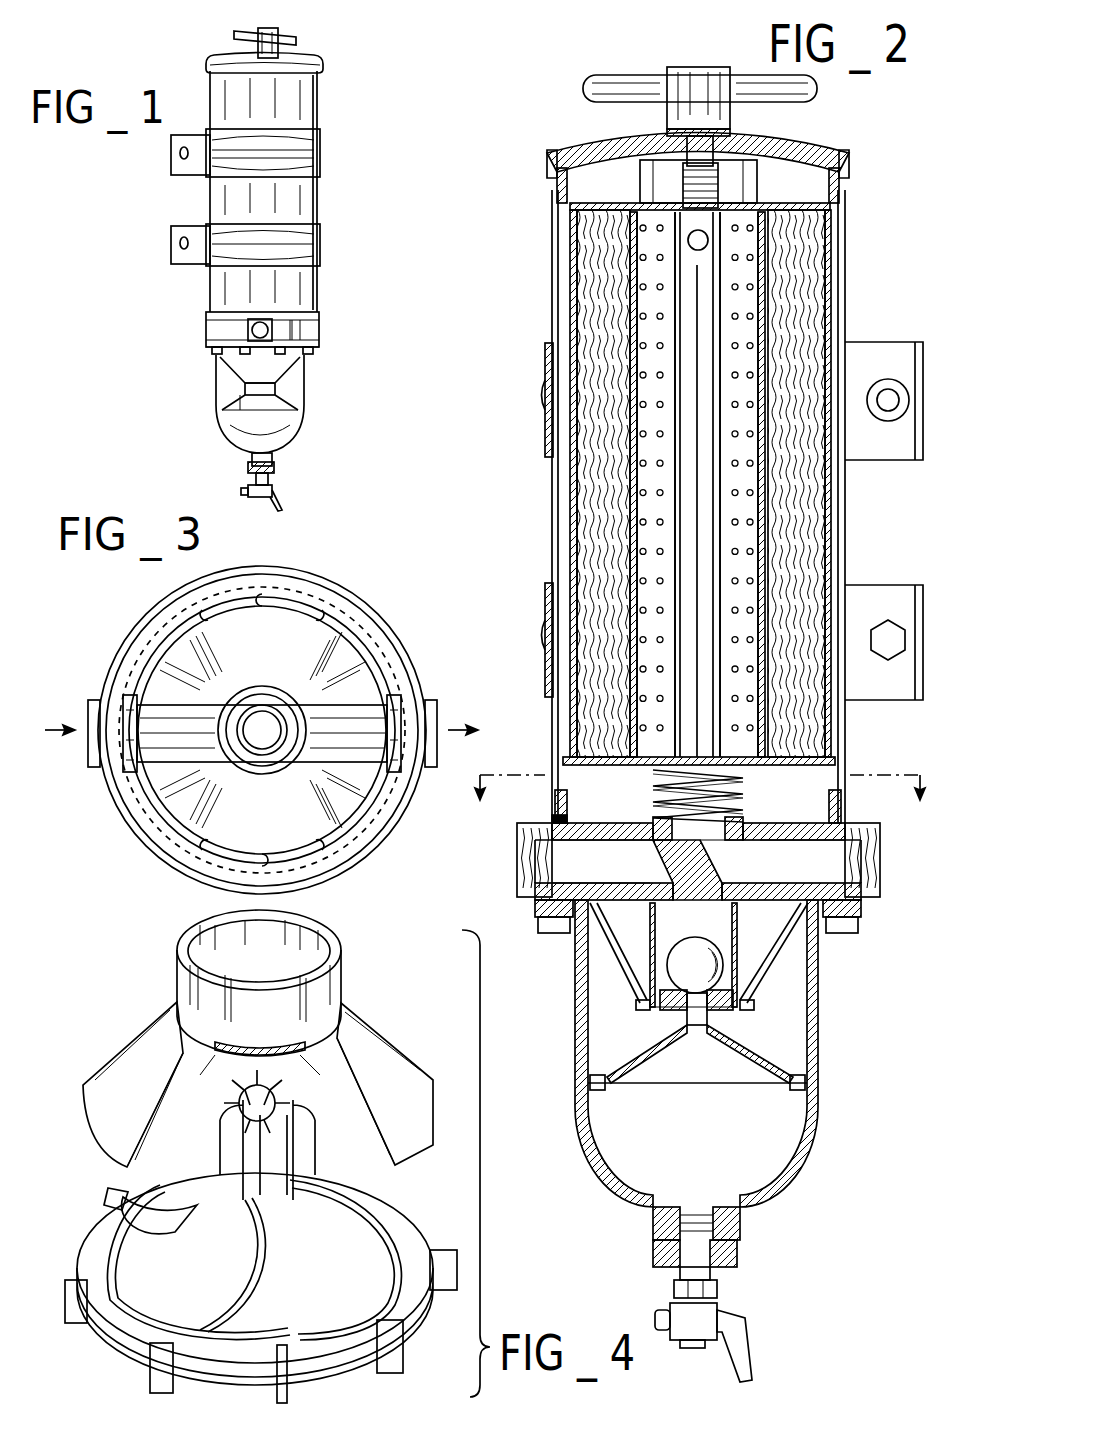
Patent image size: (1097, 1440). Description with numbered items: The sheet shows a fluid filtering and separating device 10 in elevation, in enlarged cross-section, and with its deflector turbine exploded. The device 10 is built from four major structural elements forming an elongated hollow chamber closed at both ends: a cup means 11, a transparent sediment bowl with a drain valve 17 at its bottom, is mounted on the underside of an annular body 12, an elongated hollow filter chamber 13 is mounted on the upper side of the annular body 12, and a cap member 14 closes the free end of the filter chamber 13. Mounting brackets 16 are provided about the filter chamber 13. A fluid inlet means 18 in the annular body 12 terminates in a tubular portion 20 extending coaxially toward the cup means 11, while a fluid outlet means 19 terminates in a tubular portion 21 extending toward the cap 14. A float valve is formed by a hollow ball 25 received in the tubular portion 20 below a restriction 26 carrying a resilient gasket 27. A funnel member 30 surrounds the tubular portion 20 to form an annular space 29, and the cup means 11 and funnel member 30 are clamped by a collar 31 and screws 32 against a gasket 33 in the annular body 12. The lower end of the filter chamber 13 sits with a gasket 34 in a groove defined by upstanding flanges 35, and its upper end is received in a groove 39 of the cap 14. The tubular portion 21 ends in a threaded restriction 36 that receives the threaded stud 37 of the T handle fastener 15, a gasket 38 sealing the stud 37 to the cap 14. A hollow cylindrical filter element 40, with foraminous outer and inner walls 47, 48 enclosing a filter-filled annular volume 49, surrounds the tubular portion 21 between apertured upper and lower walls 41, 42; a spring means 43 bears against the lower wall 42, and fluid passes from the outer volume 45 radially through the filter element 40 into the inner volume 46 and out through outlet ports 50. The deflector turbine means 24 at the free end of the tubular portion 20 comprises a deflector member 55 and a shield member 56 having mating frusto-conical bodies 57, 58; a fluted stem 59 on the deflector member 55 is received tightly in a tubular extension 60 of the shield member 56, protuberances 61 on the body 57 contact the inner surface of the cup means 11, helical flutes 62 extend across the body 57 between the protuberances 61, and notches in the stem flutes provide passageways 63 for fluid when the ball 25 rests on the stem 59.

In FIG. 1, the device 10 is at (245, 269).
In FIG. 2, the device 10 is at (700, 702).
In FIG. 1, the cup means 11 is at (305, 400).
In FIG. 2, the cup means 11 is at (818, 1110).
In FIG. 1, the annular body 12 is at (256, 357).
In FIG. 2, the annular body 12 is at (700, 902).
In FIG. 3, the annular body 12 is at (255, 716).
In FIG. 1, the filter chamber 13 is at (318, 200).
In FIG. 2, the filter chamber 13 is at (848, 532).
In FIG. 3, the filter chamber 13 is at (135, 650).
In FIG. 1, the cap member 14 is at (318, 63).
In FIG. 2, the cap member 14 is at (696, 156).
In FIG. 1, the T handle fastener 15 is at (240, 40).
In FIG. 2, the T handle fastener 15 is at (693, 112).
In FIG. 1, the mounting brackets 16 is at (172, 243).
In FIG. 2, the mounting brackets 16 is at (890, 460).
In FIG. 1, the drain valve 17 is at (274, 484).
In FIG. 2, the drain valve 17 is at (720, 1300).
In FIG. 1, the fluid inlet means 18 is at (250, 327).
In FIG. 2, the fluid inlet means 18 is at (520, 862).
In FIG. 3, the fluid inlet means 18 is at (90, 705).
In FIG. 2, the fluid outlet means 19 is at (878, 880).
In FIG. 3, the fluid outlet means 19 is at (437, 703).
In FIG. 1, the tubular portion 20 is at (290, 390).
In FIG. 2, the tubular portion 20 is at (670, 960).
In FIG. 2, the tubular portion 21 is at (604, 484).
In FIG. 3, the tubular portion 21 is at (280, 718).
In FIG. 1, the deflector turbine means 24 is at (257, 405).
In FIG. 2, the deflector turbine means 24 is at (697, 1018).
In FIG. 4, the deflector turbine means 24 is at (244, 1156).
In FIG. 2, the hollow ball 25 is at (685, 1000).
In FIG. 2, the restriction 26 is at (680, 880).
In FIG. 2, the resilient gasket 27 is at (735, 920).
In FIG. 2, the annular space 29 is at (745, 1000).
In FIG. 3, the annular space 29 is at (235, 705).
In FIG. 1, the funnel member 30 is at (245, 375).
In FIG. 2, the funnel member 30 is at (790, 985).
In FIG. 3, the funnel member 30 is at (262, 724).
In FIG. 1, the collar 31 is at (210, 348).
In FIG. 2, the collar 31 is at (860, 920).
In FIG. 1, the screws 32 is at (214, 352).
In FIG. 2, the screws 32 is at (560, 930).
In FIG. 2, the gasket 33 is at (815, 875).
In FIG. 2, the gasket 34 is at (563, 817).
In FIG. 2, the upstanding flange 35 is at (520, 820).
In FIG. 2, the threaded restriction 36 is at (743, 180).
In FIG. 2, the threaded stud 37 is at (690, 150).
In FIG. 2, the gasket 38 is at (718, 117).
In FIG. 2, the groove 39 is at (553, 155).
In FIG. 2, the filter element 40 is at (600, 292).
In FIG. 2, the upper wall 41 is at (572, 230).
In FIG. 2, the lower wall 42 is at (580, 752).
In FIG. 2, the spring means 43 is at (745, 793).
In FIG. 2, the outer annular volume 45 is at (697, 484).
In FIG. 2, the inner annular volume 46 is at (655, 518).
In FIG. 2, the foraminous outer cylindrical wall 47 is at (831, 250).
In FIG. 2, the foraminous inner cylindrical wall 48 is at (765, 320).
In FIG. 2, the annular volume 49 is at (800, 283).
In FIG. 2, the outlet ports 50 is at (688, 243).
In FIG. 2, the deflector member 55 is at (670, 1085).
In FIG. 4, the deflector member 55 is at (244, 1288).
In FIG. 2, the shield member 56 is at (770, 1060).
In FIG. 4, the shield member 56 is at (170, 1000).
In FIG. 4, the frusto-conical body 57 is at (138, 1335).
In FIG. 4, the frusto-conical body 58 is at (115, 1070).
In FIG. 4, the fluted stem 59 is at (225, 1115).
In FIG. 4, the tubular extension 60 is at (195, 935).
In FIG. 2, the protuberances 61 is at (595, 1083).
In FIG. 4, the protuberances 61 is at (112, 1195).
In FIG. 4, the flutes 62 is at (395, 1225).
In FIG. 2, the passageways 63 is at (670, 1005).